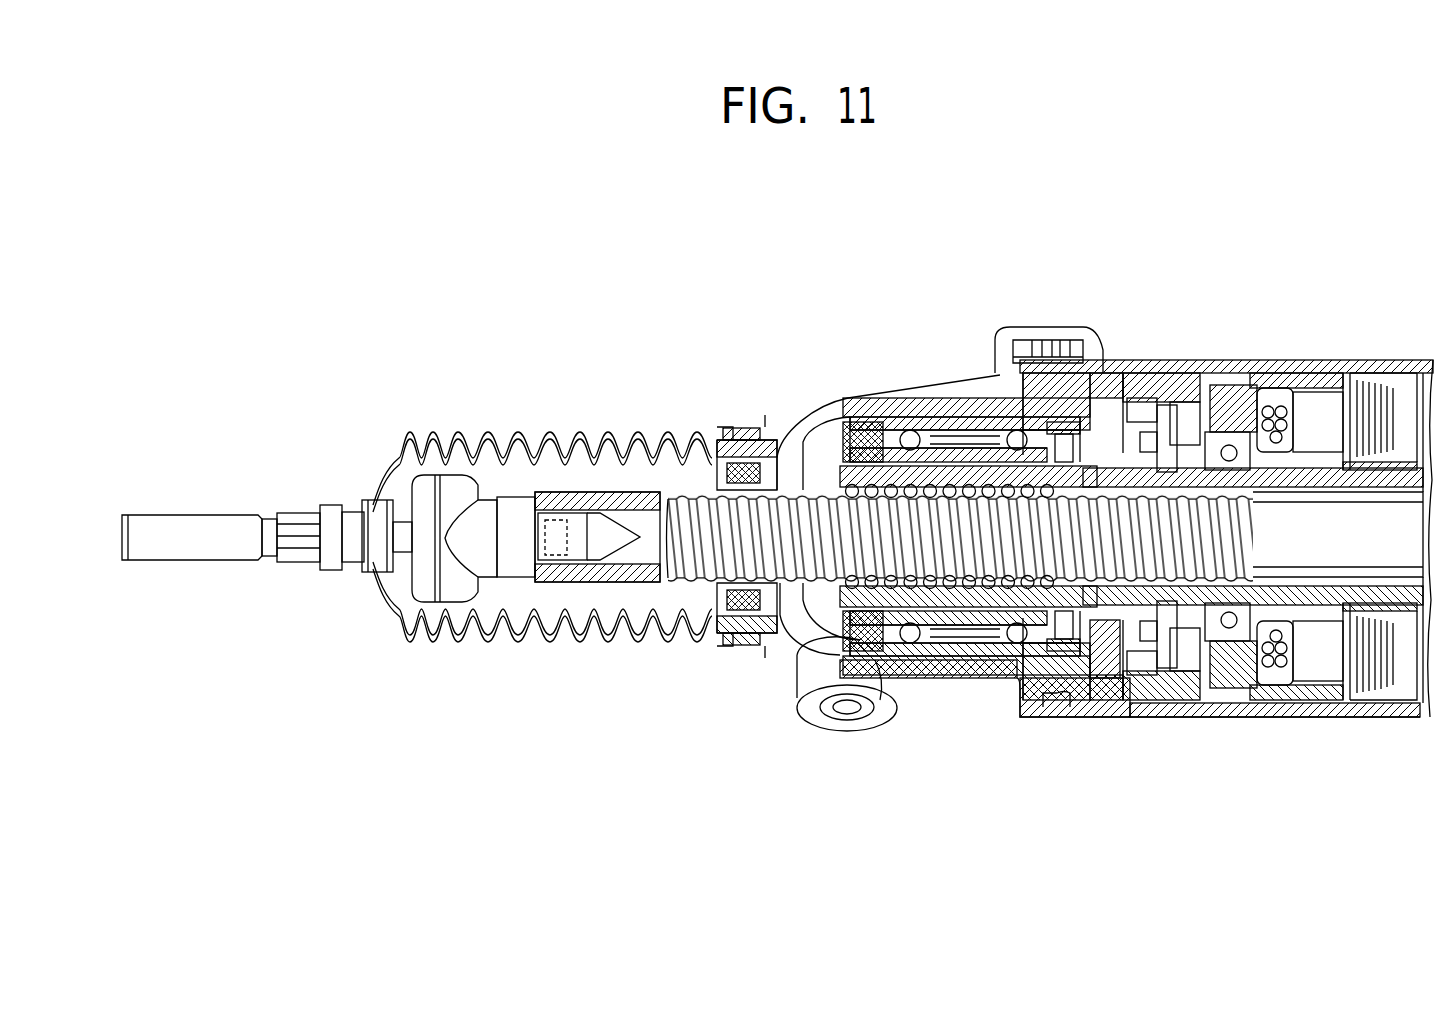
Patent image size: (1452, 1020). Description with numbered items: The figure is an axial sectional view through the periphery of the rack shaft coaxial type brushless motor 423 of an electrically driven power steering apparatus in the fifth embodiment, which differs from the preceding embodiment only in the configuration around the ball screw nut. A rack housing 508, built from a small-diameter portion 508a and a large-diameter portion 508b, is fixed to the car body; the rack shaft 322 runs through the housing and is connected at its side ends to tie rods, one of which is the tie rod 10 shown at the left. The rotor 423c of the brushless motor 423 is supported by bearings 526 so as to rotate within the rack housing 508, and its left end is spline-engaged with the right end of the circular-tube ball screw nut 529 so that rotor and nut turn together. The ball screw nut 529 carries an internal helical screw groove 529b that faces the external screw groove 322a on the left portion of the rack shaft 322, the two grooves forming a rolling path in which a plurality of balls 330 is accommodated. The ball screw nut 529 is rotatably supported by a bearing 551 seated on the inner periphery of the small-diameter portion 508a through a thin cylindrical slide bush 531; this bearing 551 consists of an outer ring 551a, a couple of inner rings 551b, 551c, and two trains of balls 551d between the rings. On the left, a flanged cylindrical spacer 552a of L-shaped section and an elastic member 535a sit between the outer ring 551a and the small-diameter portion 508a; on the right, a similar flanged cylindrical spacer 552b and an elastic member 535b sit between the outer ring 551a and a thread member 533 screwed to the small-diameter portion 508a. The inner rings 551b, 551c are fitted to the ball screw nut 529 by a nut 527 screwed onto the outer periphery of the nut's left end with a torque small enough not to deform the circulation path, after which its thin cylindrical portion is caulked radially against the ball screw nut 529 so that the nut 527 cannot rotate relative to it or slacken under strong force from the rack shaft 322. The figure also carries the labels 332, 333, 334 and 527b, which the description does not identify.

The tie rod 10 is at (222, 528).
The boot 332 is at (528, 432).
The flange 333 is at (745, 430).
The seal member 334 is at (720, 483).
The rack shaft 322 is at (1336, 555).
The external screw groove 322a is at (690, 575).
The rack housing 508 is at (950, 339).
The small-diameter portion 508a is at (807, 420).
The large-diameter portion 508b is at (1059, 310).
The bearing 551 is at (1010, 417).
The outer ring 551a is at (918, 448).
The inner ring 551b is at (948, 432).
The inner ring 551c is at (980, 417).
The balls 551d is at (1040, 425).
The slide bush 531 is at (870, 417).
The bearings 526 is at (1210, 443).
The brushless motor 423 is at (1395, 380).
The rotor 423c is at (1290, 473).
The nut 527 is at (815, 655).
The bracket arm 527b is at (800, 650).
The balls 330 is at (957, 605).
The elastic member 535a is at (830, 700).
The flanged cylindrical spacer 552a is at (847, 647).
The internal helical screw groove 529b is at (930, 617).
The ball screw nut 529 is at (983, 620).
The flanged cylindrical spacer 552b is at (1045, 643).
The elastic member 535b is at (1053, 705).
The thread member 533 is at (1080, 690).